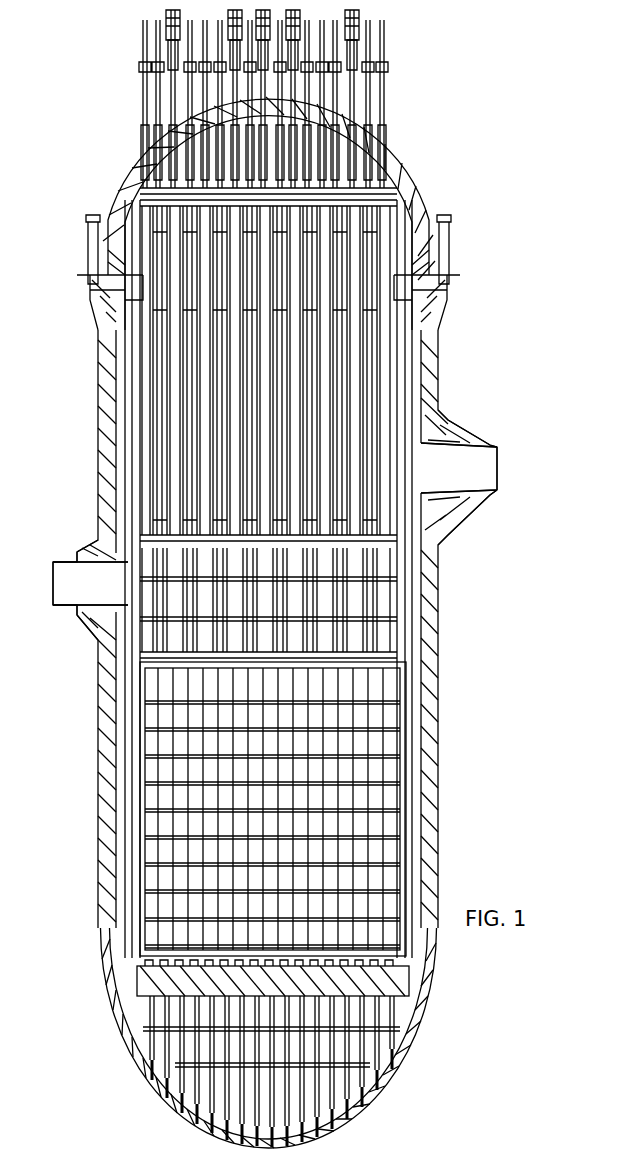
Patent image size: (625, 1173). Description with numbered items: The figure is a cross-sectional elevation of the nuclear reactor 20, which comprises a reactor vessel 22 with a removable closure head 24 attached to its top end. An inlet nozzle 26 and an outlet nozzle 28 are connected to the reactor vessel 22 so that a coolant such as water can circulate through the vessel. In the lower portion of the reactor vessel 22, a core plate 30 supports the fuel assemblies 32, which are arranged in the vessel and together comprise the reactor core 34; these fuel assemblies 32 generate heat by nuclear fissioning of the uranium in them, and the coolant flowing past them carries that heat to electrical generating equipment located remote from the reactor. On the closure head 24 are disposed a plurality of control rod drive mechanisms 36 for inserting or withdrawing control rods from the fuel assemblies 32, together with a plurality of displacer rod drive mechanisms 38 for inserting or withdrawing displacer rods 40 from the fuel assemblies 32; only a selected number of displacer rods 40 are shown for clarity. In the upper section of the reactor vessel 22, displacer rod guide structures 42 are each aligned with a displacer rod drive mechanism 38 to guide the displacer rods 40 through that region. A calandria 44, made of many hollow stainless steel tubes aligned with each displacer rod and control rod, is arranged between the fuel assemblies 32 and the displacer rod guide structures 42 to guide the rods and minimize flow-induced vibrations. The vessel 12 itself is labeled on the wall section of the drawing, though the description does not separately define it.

The reactor vessel 12 is at (98, 478).
The nuclear reactor 20 is at (497, 390).
The reactor vessel 22 is at (428, 400).
The closure head 24 is at (130, 183).
The inlet nozzle 26 is at (465, 442).
The outlet nozzle 28 is at (60, 608).
The core plate 30 is at (385, 984).
The fuel assemblies 32 is at (377, 717).
The reactor core 34 is at (207, 814).
The control rod drive mechanisms 36 is at (168, 13).
The displacer rod drive mechanisms 38 is at (148, 45).
The displacer rods 40 is at (157, 370).
The displacer rod guide structures 42 is at (150, 337).
The calandria 44 is at (323, 609).